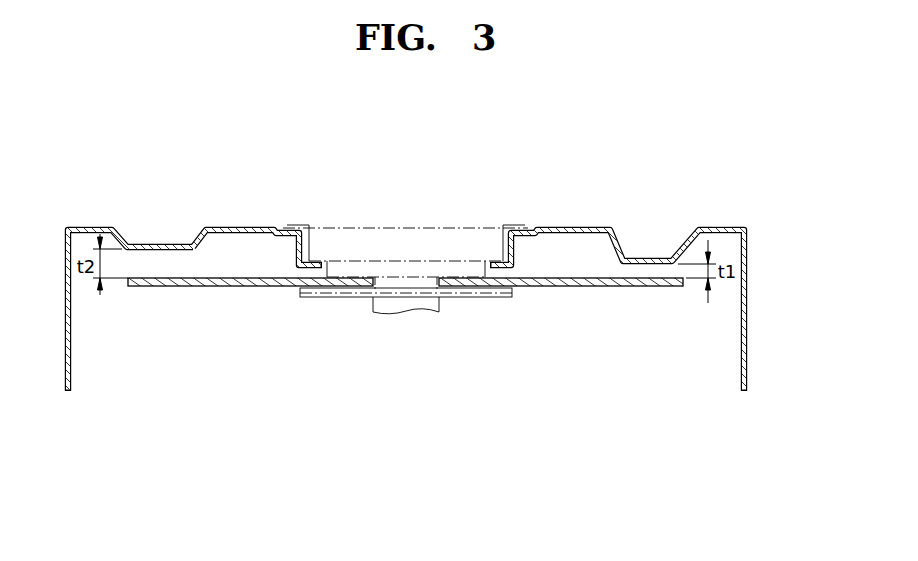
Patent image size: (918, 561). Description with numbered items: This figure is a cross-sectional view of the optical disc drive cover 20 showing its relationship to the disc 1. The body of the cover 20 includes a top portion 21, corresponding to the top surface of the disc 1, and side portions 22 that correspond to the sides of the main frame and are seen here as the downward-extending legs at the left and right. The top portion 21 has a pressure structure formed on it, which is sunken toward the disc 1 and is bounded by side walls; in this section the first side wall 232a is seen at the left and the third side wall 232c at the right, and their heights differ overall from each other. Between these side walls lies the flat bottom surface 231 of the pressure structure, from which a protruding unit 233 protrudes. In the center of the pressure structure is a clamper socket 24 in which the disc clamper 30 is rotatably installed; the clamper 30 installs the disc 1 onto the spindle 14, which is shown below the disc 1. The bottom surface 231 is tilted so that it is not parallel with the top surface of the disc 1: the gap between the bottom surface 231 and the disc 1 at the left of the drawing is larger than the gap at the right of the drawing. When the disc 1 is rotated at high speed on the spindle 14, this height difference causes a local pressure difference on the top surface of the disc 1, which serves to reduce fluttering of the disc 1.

The disc 1 is at (213, 287).
The spindle 14 is at (483, 298).
The cover 20 is at (456, 281).
The top portion 21 is at (439, 218).
The side portion 22 is at (748, 272).
The clamper socket 24 is at (507, 249).
The disc clamper 30 is at (406, 228).
The bottom surface 231 is at (158, 244).
The first side wall 232a is at (126, 236).
The third side wall 232c is at (680, 242).
The protruding unit 233 is at (242, 227).